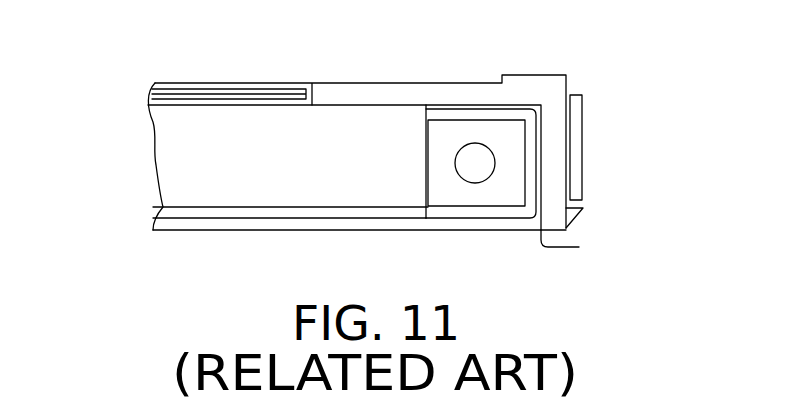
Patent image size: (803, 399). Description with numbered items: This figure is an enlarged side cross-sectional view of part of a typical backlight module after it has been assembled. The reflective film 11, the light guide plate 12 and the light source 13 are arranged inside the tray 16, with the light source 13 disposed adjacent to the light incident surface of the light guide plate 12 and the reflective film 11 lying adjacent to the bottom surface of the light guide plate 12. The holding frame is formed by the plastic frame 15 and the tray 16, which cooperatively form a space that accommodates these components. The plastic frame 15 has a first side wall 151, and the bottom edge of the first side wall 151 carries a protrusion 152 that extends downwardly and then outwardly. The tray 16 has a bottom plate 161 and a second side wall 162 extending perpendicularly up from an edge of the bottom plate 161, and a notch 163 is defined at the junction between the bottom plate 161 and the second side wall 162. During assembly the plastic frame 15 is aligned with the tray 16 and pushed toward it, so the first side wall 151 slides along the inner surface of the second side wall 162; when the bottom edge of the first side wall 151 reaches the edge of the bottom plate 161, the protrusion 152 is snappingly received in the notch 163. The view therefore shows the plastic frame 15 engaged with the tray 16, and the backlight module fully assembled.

The reflective film 11 is at (161, 211).
The light guide plate 12 is at (172, 148).
The light source 13 is at (470, 165).
The plastic frame 15 is at (571, 80).
The tray 16 is at (607, 177).
The first side wall 151 is at (553, 170).
The protrusion 152 is at (572, 217).
The bottom plate 161 is at (465, 222).
The second side wall 162 is at (573, 140).
The notch 163 is at (587, 244).